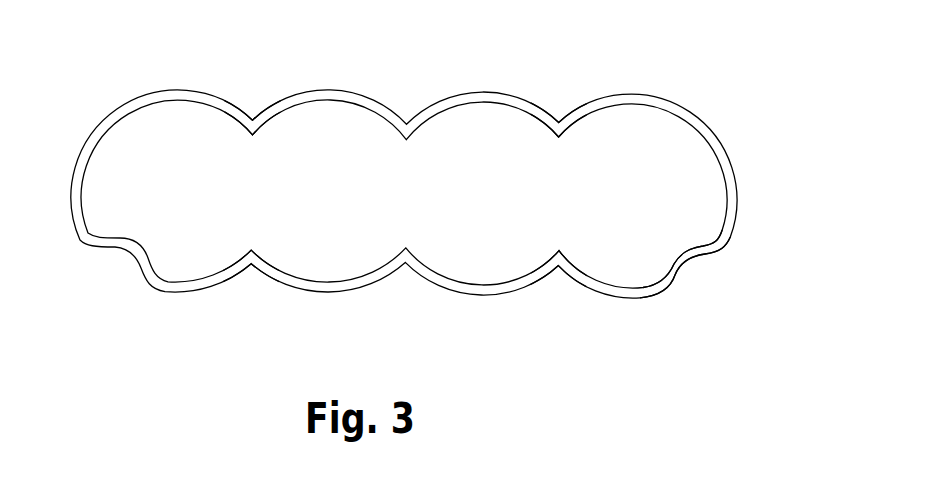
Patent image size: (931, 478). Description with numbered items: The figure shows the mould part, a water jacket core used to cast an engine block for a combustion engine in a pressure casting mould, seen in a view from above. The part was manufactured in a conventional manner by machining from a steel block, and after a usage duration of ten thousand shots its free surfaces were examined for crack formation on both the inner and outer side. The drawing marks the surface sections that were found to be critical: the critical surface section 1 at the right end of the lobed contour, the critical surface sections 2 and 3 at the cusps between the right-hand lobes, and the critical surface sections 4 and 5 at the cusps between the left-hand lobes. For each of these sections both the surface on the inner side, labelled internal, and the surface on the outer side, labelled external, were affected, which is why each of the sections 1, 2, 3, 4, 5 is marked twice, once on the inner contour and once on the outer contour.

The critical surface section 1 is at (680, 241).
The critical surface section 2 is at (556, 246).
The critical surface section 3 is at (561, 107).
The critical surface section 4 is at (244, 244).
The critical surface section 5 is at (250, 106).